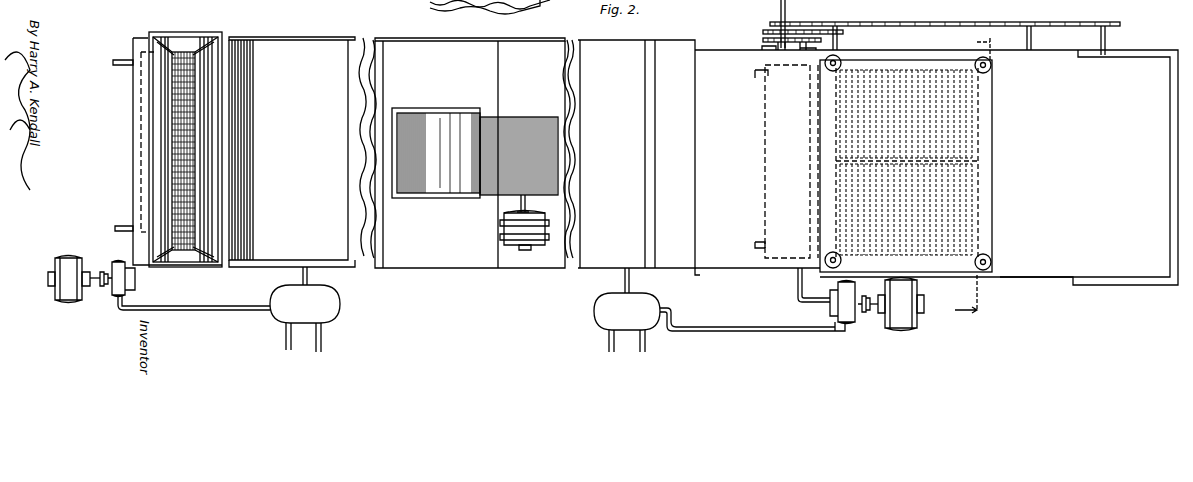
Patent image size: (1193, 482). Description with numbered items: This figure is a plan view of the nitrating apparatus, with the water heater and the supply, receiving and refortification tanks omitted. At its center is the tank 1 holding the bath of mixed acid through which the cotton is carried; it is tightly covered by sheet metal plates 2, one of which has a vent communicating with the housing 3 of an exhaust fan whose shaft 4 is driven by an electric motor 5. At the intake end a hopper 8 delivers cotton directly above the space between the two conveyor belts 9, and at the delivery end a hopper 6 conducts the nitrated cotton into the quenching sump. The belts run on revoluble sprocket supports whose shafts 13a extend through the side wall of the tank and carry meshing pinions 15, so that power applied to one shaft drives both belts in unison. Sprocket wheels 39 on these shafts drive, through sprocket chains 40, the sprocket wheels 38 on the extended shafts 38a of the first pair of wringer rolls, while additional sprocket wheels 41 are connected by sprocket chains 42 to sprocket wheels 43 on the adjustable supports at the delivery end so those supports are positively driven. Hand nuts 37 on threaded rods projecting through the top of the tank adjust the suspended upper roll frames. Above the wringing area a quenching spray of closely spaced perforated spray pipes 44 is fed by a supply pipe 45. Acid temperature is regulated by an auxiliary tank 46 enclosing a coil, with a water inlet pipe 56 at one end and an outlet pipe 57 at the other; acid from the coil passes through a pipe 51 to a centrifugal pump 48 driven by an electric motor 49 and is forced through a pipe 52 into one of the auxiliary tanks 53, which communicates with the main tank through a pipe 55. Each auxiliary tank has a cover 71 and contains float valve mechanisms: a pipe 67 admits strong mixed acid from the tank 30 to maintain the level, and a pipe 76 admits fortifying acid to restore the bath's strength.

The tank 1 is at (133, 104).
The sheet metal plates 2 is at (302, 46).
The exhaust fan housing 3 is at (446, 184).
The fan shaft 4 is at (526, 204).
The electric motor 5 is at (504, 232).
The hopper 6 is at (972, 178).
The hopper 8 is at (178, 36).
The conveyor belts 9 is at (197, 48).
The shaft 13a is at (784, 46).
The meshing pinions 15 is at (763, 40).
The strong acid tank 30 is at (506, 6).
The hand nuts 37 is at (842, 62).
The sprocket wheels 38 is at (845, 33).
The roll shafts 38a is at (840, 43).
The sprocket wheels 39 is at (764, 32).
The sprocket chains 40 is at (834, 26).
The sprocket wheel 41 is at (781, 14).
The sprocket chains 42 is at (200, 306).
The sprocket wheels 43 is at (1042, 18).
The perforated spray pipes 44 is at (886, 66).
The supply pipe 45 is at (832, 160).
The auxiliary tank 46 is at (138, 130).
The centrifugal pump 48 is at (116, 262).
The electric motor 49 is at (68, 262).
The pipe 51 is at (798, 285).
The pipe 52 is at (740, 322).
The auxiliary tanks 53 is at (341, 307).
The pipe 55 is at (309, 281).
The inlet pipe 56 is at (115, 229).
The outlet pipe 57 is at (113, 62).
The pipe 67 is at (322, 344).
The cover 71 is at (280, 296).
The pipe 76 is at (286, 344).